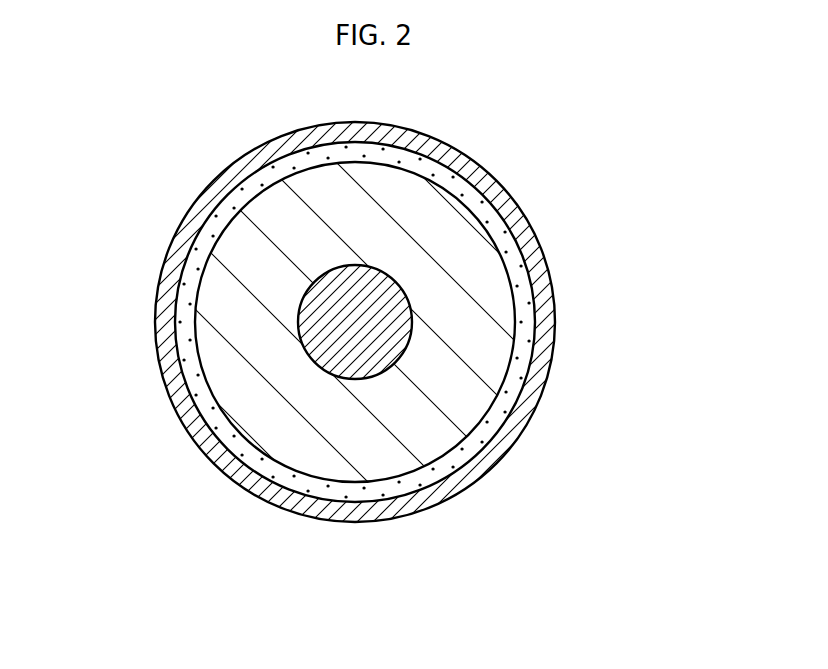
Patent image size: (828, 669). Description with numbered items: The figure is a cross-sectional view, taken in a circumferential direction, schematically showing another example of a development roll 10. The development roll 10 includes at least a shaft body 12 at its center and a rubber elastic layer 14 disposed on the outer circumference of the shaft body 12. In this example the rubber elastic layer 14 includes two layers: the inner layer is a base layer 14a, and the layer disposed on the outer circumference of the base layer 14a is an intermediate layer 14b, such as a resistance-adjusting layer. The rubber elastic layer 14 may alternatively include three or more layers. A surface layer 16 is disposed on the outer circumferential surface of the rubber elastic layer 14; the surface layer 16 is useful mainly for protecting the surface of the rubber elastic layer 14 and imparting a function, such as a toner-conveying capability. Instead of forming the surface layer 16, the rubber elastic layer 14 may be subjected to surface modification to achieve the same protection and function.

The development roll 10 is at (143, 172).
The shaft body 12 is at (412, 300).
The rubber elastic layer 14 is at (648, 445).
The base layer 14a is at (472, 405).
The intermediate layer 14b is at (472, 452).
The surface layer 16 is at (364, 523).